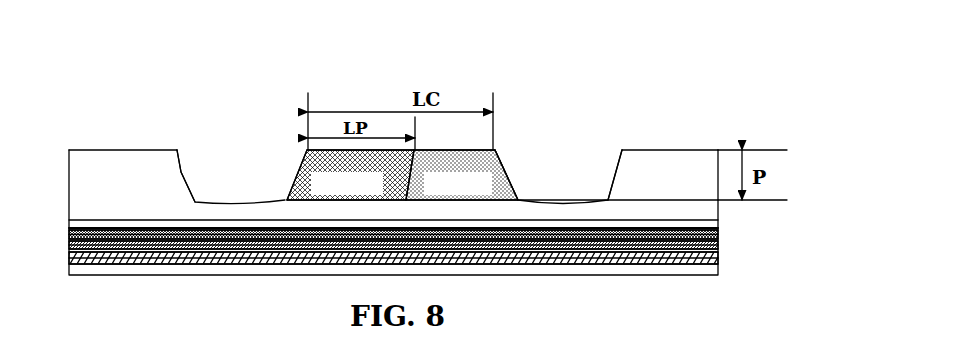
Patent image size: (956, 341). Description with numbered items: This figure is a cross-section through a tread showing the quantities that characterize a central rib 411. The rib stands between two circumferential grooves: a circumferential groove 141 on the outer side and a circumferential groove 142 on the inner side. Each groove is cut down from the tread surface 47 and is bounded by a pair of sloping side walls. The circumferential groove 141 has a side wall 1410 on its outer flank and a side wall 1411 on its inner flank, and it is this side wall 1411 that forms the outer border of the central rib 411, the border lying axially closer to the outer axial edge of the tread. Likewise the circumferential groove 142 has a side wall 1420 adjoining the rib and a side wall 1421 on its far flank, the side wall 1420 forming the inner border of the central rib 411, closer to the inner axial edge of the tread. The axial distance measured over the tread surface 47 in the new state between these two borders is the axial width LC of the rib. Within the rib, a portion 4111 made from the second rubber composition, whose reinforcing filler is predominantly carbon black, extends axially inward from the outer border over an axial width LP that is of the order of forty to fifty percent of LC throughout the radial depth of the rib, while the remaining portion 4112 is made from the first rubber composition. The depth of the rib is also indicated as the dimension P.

The tread surface 47 is at (670, 149).
The circumferential groove 141 is at (245, 164).
The side wall 1410 is at (183, 169).
The side wall 1411 is at (296, 172).
The central rib 411 is at (402, 111).
The portion made from the second rubber composition 4111 is at (347, 185).
The portion made from the first rubber composition 4112 is at (458, 185).
The side wall 1420 is at (506, 165).
The circumferential groove 142 is at (562, 163).
The side wall 1421 is at (614, 168).